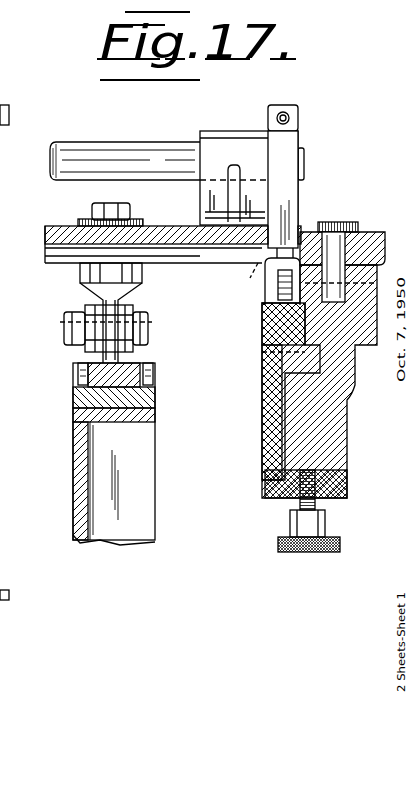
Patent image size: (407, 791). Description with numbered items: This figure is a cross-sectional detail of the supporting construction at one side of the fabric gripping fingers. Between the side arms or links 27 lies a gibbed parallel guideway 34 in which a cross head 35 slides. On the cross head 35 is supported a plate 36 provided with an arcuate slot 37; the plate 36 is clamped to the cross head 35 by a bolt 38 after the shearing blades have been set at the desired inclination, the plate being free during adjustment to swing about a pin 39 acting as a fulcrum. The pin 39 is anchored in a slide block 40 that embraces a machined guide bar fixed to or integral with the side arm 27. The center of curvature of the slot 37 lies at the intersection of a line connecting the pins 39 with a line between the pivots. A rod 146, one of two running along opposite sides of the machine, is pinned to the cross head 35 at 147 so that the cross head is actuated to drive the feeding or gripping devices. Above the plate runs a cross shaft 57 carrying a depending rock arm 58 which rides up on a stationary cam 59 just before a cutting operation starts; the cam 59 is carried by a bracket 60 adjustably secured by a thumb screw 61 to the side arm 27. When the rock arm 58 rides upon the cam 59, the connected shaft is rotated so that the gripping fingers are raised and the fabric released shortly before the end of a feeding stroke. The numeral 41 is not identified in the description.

The side arm 27 is at (317, 421).
The guideway 34 is at (92, 387).
The cross head 35 is at (90, 287).
The plate 36 is at (48, 237).
The arcuate slot 37 is at (243, 279).
The bolt 38 is at (112, 205).
The pin 39 is at (335, 223).
The slide block 40 is at (379, 300).
The clamp block 41 is at (337, 351).
The cross shaft 57 is at (53, 163).
The rock arm 58 is at (292, 206).
The cam 59 is at (262, 323).
The bracket 60 is at (272, 396).
The thumb screw 61 is at (300, 522).
The rod 146 is at (136, 323).
The pin connection 147 is at (64, 327).